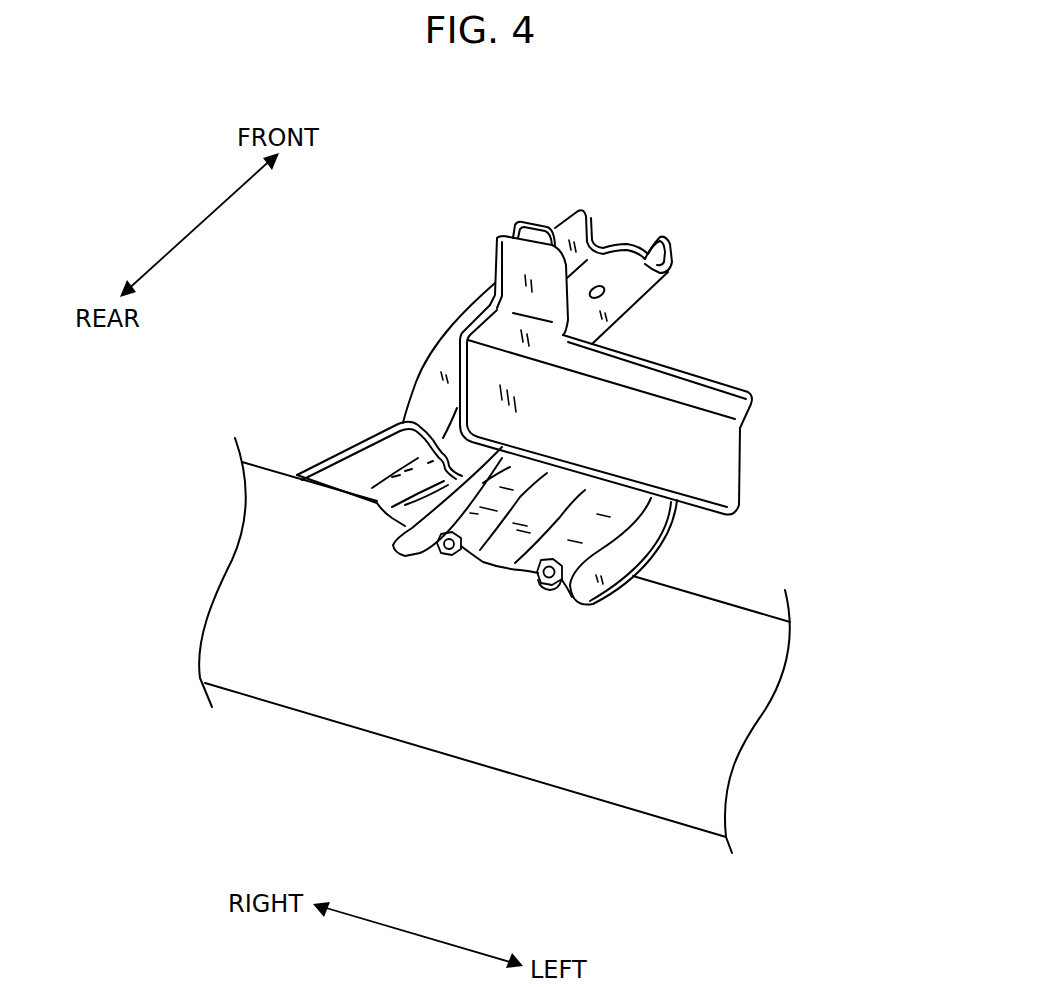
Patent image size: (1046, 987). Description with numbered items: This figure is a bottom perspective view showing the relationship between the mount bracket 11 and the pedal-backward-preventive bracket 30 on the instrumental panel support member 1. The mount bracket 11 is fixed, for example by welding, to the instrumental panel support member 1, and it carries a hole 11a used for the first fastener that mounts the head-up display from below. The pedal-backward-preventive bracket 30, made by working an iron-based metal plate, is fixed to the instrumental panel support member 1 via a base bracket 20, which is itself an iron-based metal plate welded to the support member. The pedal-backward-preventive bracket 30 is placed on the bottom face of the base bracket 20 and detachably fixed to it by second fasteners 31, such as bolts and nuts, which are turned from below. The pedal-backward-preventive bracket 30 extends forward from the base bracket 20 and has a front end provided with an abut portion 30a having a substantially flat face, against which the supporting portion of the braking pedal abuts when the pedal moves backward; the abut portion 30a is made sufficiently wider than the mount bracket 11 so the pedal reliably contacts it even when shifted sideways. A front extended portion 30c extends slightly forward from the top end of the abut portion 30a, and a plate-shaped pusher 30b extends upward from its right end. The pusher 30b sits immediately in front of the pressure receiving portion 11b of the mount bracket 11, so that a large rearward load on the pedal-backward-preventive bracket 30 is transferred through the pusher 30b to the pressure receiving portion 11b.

The instrumental panel support member 1 is at (412, 713).
The mount bracket 11 is at (633, 250).
The hole 11a is at (605, 298).
The pressure receiving portion 11b is at (532, 232).
The base bracket 20 is at (354, 475).
The pedal-backward-preventive bracket 30 is at (643, 538).
The abut portion 30a is at (725, 457).
The pusher 30b is at (512, 259).
The front extended portion 30c is at (717, 393).
The second fastener 31 is at (444, 556).